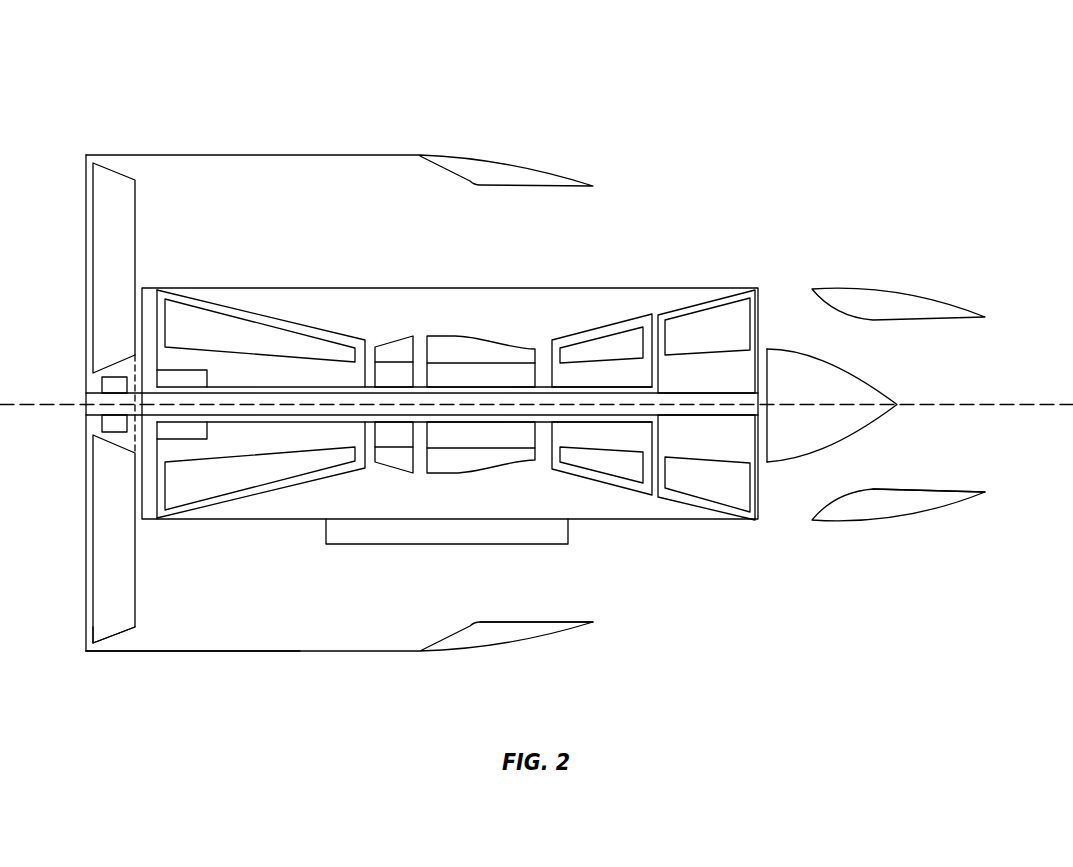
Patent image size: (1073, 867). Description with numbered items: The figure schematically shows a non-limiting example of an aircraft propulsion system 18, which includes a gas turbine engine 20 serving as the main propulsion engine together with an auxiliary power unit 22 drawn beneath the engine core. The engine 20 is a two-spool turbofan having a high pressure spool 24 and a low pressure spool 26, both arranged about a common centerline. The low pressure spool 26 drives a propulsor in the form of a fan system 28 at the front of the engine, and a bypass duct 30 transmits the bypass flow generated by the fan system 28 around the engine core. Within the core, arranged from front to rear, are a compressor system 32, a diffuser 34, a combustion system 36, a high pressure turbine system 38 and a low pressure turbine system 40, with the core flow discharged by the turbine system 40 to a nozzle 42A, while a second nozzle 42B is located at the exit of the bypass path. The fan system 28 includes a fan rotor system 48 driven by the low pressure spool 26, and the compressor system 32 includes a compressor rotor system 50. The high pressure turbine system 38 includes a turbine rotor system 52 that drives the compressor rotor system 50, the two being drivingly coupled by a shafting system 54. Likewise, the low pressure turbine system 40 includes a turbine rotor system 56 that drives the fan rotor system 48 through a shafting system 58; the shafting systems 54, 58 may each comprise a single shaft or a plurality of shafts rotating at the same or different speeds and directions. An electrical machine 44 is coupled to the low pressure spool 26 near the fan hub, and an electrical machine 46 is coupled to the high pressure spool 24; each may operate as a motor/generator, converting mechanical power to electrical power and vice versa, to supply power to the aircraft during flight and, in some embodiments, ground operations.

The propulsion system 18 is at (202, 123).
The gas turbine engine 20 is at (882, 139).
The auxiliary power unit 22 is at (448, 545).
The high pressure spool 24 is at (582, 240).
The low pressure spool 26 is at (690, 221).
The fan system 28 is at (85, 528).
The bypass duct 30 is at (232, 630).
The compressor system 32 is at (318, 483).
The diffuser 34 is at (397, 342).
The combustion system 36 is at (473, 335).
The high pressure turbine system 38 is at (598, 483).
The low pressure turbine system 40 is at (697, 507).
The nozzle 42A is at (942, 503).
The nozzle 42B is at (528, 640).
The electrical machine 44 is at (100, 383).
The electrical machine 46 is at (207, 427).
The fan rotor system 48 is at (113, 638).
The compressor rotor system 50 is at (293, 332).
The turbine rotor system 52 is at (623, 332).
The shafting system 54 is at (545, 425).
The turbine rotor system 56 is at (698, 312).
The shafting system 58 is at (673, 417).